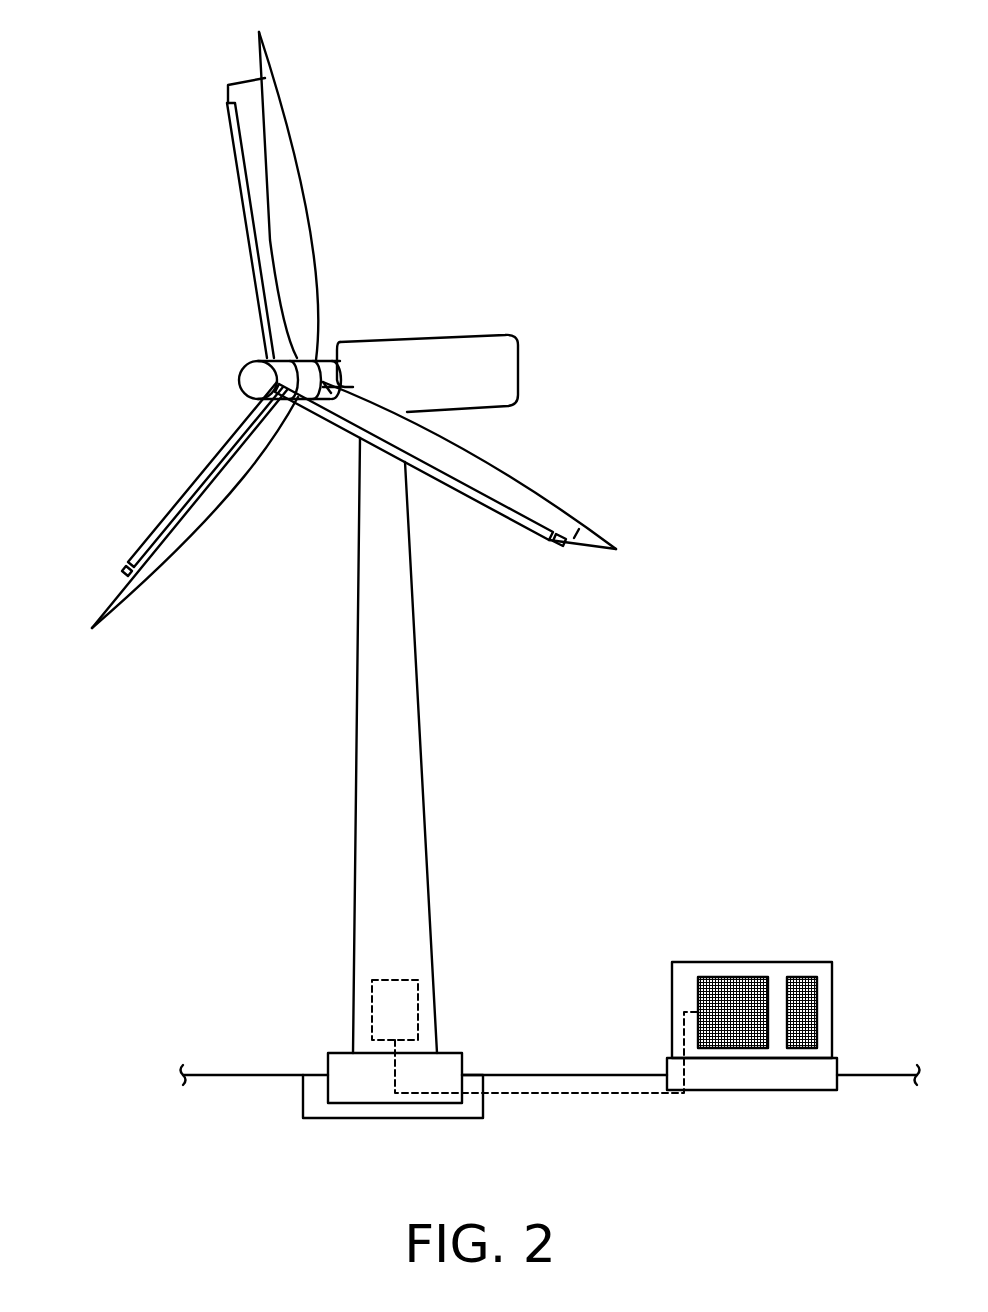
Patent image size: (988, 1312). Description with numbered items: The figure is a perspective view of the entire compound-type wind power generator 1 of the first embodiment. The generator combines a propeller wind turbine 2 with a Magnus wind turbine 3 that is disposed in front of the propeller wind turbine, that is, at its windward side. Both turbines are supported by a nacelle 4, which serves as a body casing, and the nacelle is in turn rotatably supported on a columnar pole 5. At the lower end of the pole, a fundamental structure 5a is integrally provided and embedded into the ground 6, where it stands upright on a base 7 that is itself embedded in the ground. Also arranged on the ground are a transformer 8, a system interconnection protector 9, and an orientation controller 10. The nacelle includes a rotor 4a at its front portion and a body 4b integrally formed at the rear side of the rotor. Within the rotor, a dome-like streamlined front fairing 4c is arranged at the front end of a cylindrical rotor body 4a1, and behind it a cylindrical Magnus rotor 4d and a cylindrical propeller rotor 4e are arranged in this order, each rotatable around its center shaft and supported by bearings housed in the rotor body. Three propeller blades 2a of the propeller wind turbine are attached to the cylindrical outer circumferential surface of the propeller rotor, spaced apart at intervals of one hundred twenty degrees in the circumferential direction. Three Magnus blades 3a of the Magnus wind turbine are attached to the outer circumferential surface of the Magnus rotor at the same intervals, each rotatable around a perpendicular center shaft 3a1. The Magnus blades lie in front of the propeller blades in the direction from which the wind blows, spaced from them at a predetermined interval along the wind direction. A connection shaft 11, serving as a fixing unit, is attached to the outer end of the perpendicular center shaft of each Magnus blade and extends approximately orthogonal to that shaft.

The compound-type wind power generator 1 is at (143, 320).
The propeller wind turbine 2 is at (298, 170).
The propeller blade 2a is at (290, 131).
The Magnus wind turbine 3 is at (240, 192).
The Magnus blade 3a is at (248, 246).
The perpendicular center shaft 3a1 is at (228, 95).
The nacelle 4 is at (428, 340).
The rotor 4a is at (236, 383).
The cylindrical rotor body 4a1 is at (305, 360).
The body 4b is at (490, 370).
The front fairing 4c is at (257, 380).
The Magnus rotor 4d is at (240, 366).
The propeller rotor 4e is at (330, 358).
The columnar pole 5 is at (416, 670).
The fundamental structure 5a is at (338, 1065).
The ground 6 is at (532, 1073).
The base 7 is at (315, 1105).
The transformer 8 is at (420, 1010).
The system interconnection protector 9 is at (727, 977).
The orientation controller 10 is at (795, 977).
The connection shaft 11 is at (236, 82).